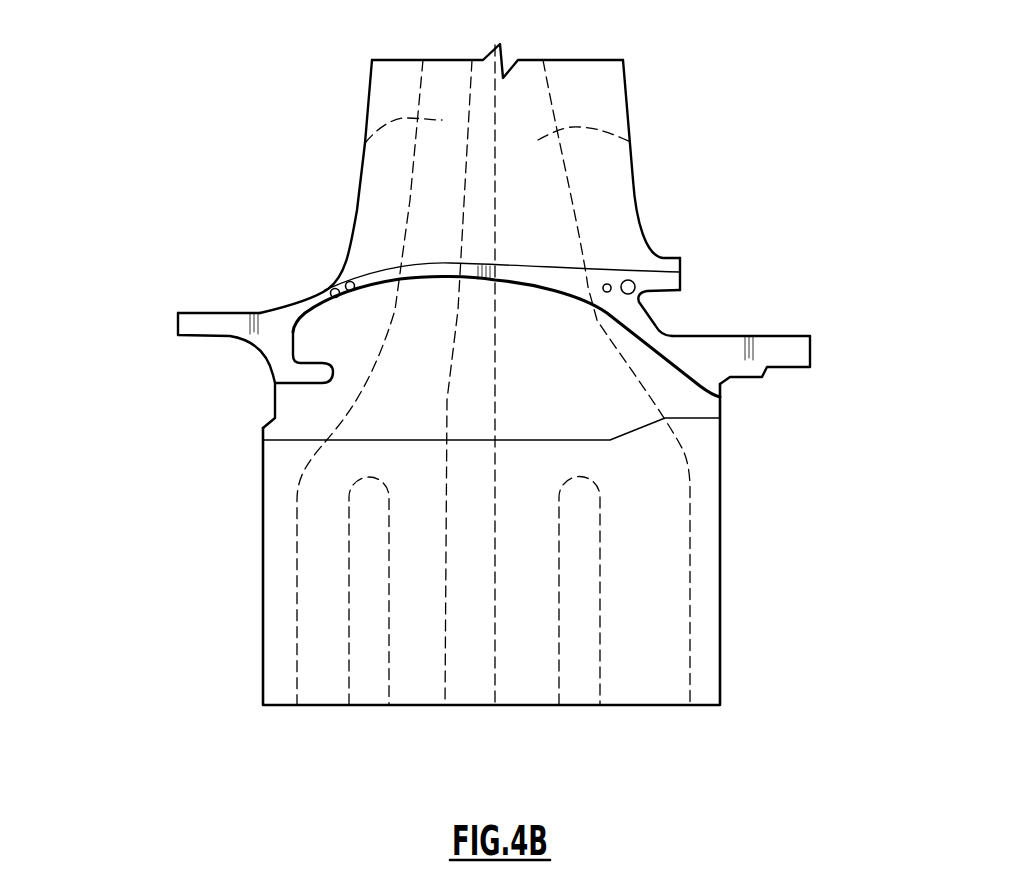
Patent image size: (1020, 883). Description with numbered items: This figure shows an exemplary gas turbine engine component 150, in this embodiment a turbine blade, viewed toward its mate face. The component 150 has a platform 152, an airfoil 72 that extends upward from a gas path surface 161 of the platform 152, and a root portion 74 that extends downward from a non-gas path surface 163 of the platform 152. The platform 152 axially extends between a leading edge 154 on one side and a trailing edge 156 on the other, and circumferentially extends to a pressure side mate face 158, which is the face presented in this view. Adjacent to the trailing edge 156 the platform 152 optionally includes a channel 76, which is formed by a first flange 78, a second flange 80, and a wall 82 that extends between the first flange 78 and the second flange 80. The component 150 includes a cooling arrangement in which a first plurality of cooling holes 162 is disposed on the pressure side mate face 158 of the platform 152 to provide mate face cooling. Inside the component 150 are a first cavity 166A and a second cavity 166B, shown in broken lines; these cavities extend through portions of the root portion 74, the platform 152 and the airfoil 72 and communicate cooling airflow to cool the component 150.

The component 150 is at (464, 357).
The airfoil 72 is at (577, 80).
The root portion 74 is at (720, 482).
The channel 76 is at (663, 312).
The first flange 78 is at (675, 280).
The second flange 80 is at (808, 348).
The wall 82 is at (660, 320).
The platform 152 is at (227, 313).
The leading edge 154 is at (193, 326).
The trailing edge 156 is at (756, 303).
The pressure side mate face 158 is at (506, 300).
The gas path surface 161 is at (512, 265).
The first plurality of cooling holes 162 is at (345, 299).
The non-gas path surface 163 is at (520, 286).
The first cavity 166A is at (365, 143).
The second cavity 166B is at (633, 143).